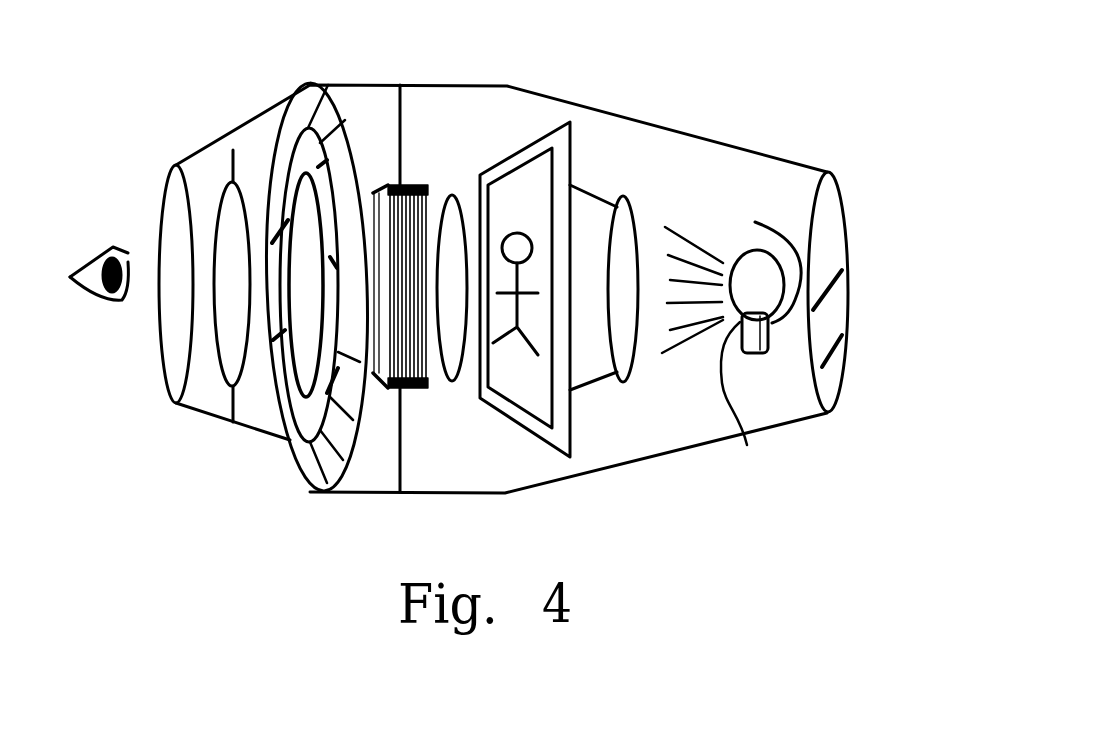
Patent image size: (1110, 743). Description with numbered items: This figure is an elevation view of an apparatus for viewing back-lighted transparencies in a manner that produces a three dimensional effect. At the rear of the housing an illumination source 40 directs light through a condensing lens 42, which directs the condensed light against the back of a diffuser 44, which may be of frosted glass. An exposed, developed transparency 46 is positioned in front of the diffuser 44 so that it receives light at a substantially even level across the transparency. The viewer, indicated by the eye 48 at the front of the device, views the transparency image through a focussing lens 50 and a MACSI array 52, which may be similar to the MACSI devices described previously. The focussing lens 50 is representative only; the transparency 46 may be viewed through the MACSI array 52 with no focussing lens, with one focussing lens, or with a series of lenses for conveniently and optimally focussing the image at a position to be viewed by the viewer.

The illumination source 40 is at (731, 351).
The condensing lens 42 is at (640, 206).
The diffuser 44 is at (570, 143).
The transparency 46 is at (520, 181).
The eye 48 is at (88, 288).
The focussing lens 50 is at (217, 366).
The MACSI array 52 is at (388, 388).